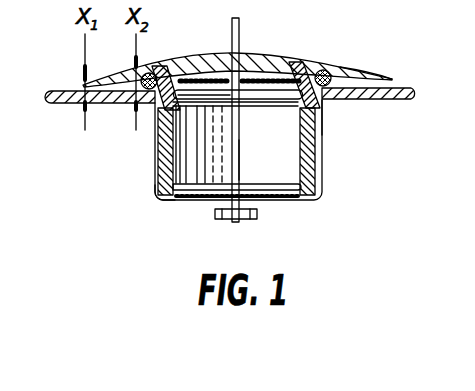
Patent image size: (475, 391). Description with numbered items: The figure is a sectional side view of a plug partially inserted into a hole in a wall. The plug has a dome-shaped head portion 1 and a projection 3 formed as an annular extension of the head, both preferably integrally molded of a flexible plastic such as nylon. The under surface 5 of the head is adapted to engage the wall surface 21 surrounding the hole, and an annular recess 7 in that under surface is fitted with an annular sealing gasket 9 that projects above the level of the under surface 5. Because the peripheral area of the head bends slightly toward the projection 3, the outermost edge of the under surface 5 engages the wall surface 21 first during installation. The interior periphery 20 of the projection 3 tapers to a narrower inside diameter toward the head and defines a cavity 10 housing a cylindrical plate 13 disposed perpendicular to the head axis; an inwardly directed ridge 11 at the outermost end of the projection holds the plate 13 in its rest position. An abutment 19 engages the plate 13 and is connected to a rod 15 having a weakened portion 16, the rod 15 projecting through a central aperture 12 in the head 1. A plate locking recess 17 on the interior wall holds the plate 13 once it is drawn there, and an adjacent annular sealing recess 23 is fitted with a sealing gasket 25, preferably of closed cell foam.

The head portion 1 is at (250, 58).
The projection 3 is at (330, 103).
The under surface 5 is at (335, 102).
The annular recess 7 is at (333, 58).
The annular sealing gasket 9 is at (318, 69).
The cavity 10 is at (176, 157).
The inwardly directed ridge 11 is at (172, 203).
The central aperture 12 is at (222, 62).
The cylindrical plate 13 is at (282, 199).
The rod 15 is at (240, 133).
The weakened portion 16 is at (240, 160).
The plate locking recess 17 is at (203, 100).
The abutment 19 is at (230, 222).
The interior periphery 20 is at (302, 168).
The wall surface 21 is at (392, 87).
The annular sealing recess 23 is at (281, 68).
The sealing gasket 25 is at (187, 45).